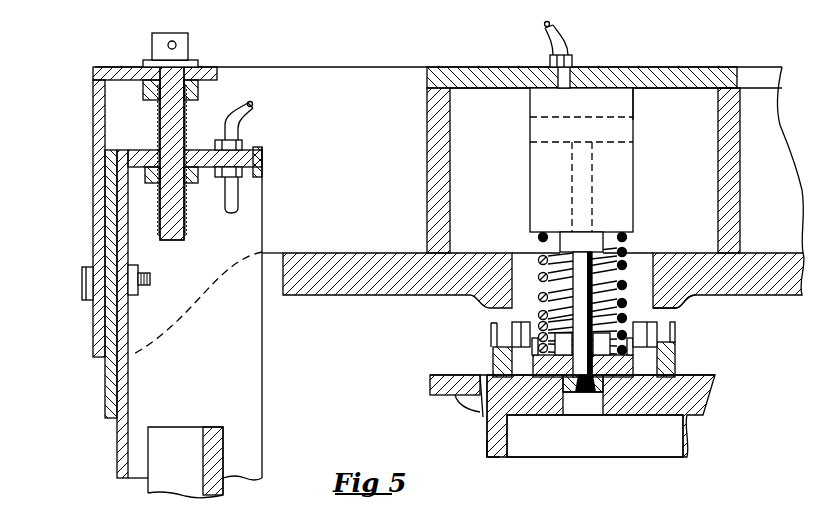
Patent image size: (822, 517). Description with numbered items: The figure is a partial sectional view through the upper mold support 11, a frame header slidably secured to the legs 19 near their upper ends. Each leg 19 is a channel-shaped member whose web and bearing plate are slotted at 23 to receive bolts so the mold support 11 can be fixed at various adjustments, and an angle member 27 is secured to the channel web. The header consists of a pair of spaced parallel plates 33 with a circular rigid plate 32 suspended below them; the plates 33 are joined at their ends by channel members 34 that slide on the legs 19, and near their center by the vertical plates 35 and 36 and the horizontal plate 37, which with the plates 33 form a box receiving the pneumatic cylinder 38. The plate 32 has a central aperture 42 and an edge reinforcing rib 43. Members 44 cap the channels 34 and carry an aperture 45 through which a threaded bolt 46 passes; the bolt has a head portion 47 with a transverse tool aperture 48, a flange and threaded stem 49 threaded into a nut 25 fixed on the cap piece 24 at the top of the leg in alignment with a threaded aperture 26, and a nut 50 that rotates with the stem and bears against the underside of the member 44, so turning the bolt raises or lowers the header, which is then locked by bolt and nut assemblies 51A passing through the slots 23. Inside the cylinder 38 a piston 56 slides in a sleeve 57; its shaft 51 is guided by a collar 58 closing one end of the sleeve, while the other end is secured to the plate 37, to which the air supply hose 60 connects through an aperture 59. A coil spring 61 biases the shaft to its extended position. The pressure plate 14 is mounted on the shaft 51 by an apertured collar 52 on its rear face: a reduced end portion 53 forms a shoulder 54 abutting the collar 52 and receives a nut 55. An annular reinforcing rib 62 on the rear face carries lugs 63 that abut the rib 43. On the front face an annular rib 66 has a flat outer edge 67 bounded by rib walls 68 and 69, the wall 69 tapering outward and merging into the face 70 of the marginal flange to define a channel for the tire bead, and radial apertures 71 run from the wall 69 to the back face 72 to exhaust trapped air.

The upper mold support 11 is at (352, 82).
The pressure plate 14 is at (685, 371).
The leg 19 is at (262, 336).
The slot 23 is at (117, 254).
The cap piece 24 is at (257, 148).
The nut 25 is at (156, 183).
The threaded aperture 26 is at (189, 150).
The angle member 27 is at (185, 430).
The circular rigid plate 32 is at (332, 295).
The spaced parallel plates 33 is at (398, 68).
The channel member 34 is at (93, 108).
The vertically disposed plate 35 is at (445, 131).
The vertically disposed plate 36 is at (723, 168).
The horizontally disposed plate 37 is at (665, 88).
The pneumatic cylinder 38 is at (648, 172).
The central aperture 42 is at (638, 253).
The reinforcing rib 43 is at (684, 299).
The member 44 is at (121, 67).
The aperture 45 is at (198, 64).
The threaded bolt 46 is at (181, 53).
The head portion 47 is at (153, 37).
The tool inserting transverse aperture 48 is at (176, 46).
The threaded stem 49 is at (193, 60).
The nut 50 is at (198, 88).
The piston shaft 51 is at (589, 246).
The bolt and nut assembly 51A is at (86, 272).
The apertured collar 52 is at (657, 355).
The end portion 53 is at (580, 392).
The shoulder 54 is at (515, 350).
The nut 55 is at (595, 393).
The piston 56 is at (627, 130).
The sleeve 57 is at (633, 106).
The collar 58 is at (593, 234).
The aperture 59 is at (563, 78).
The air pressure supply hose 60 is at (562, 47).
The coil spring 61 is at (627, 268).
The annular reinforcing rib 62 is at (492, 352).
The lug 63 is at (512, 330).
The annular rib 66 is at (508, 457).
The flat outer edge 67 is at (489, 457).
The rib wall 68 is at (508, 423).
The rib wall 69 is at (478, 412).
The face of marginal flange 70 is at (452, 397).
The aperture 71 is at (485, 441).
The back face 72 is at (453, 375).